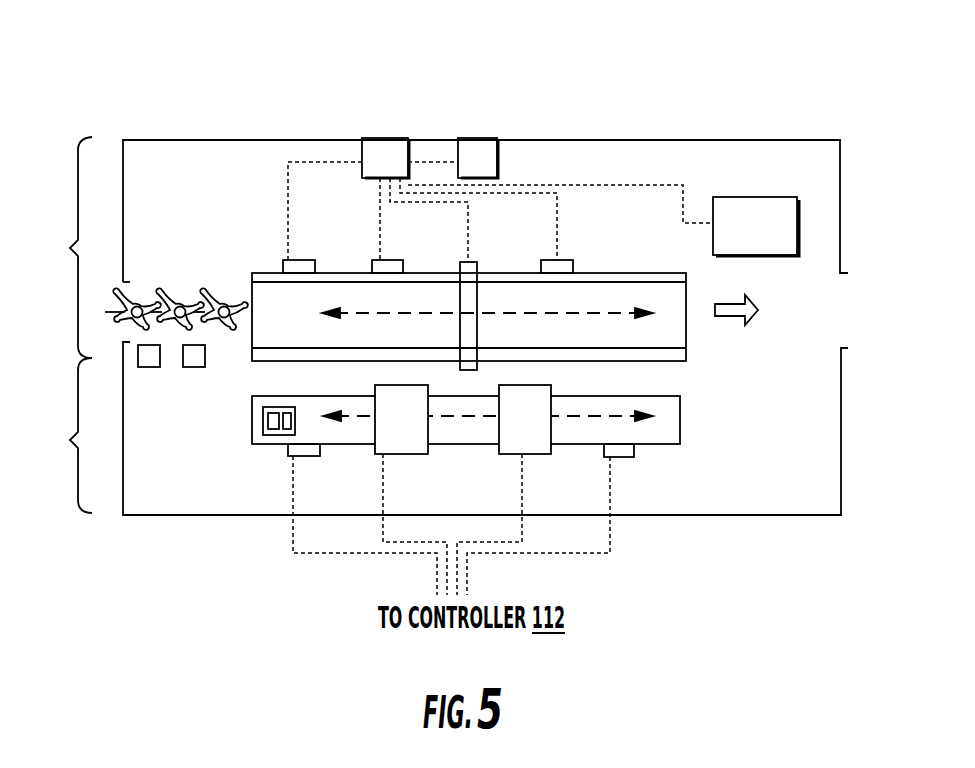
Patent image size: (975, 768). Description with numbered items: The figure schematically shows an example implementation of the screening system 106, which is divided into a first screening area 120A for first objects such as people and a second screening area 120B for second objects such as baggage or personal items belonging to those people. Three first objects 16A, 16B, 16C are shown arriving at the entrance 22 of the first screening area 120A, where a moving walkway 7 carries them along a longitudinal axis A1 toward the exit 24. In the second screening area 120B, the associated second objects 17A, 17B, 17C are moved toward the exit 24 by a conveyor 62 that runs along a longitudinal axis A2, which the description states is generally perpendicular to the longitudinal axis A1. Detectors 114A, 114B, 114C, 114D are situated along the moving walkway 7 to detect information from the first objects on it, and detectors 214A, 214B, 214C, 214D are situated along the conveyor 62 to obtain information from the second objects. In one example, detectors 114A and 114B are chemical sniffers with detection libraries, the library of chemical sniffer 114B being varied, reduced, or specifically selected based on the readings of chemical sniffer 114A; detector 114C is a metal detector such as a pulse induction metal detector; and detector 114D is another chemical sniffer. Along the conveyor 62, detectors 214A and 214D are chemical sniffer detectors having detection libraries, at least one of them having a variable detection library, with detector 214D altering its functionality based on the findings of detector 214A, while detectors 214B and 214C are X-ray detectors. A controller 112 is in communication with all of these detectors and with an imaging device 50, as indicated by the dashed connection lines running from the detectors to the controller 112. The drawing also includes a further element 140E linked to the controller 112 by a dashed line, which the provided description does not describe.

The screening system 106 is at (824, 100).
The first screening area 120A is at (57, 247).
The second screening area 120B is at (57, 435).
The entrance 22 is at (117, 300).
The exit 24 is at (840, 298).
The first object 16A is at (232, 292).
The first object 16B is at (190, 292).
The first object 16C is at (148, 292).
The second object 17A is at (263, 420).
The second object 17B is at (195, 369).
The second object 17C is at (150, 369).
The controller 112 is at (403, 171).
The imaging device 50 is at (490, 171).
The detector 114A is at (300, 258).
The detector 114B is at (392, 258).
The detector 114C is at (475, 260).
The detector 114D is at (566, 258).
The processing station 140E is at (742, 197).
The moving walkway 7 is at (673, 338).
The conveyor 62 is at (673, 435).
The detector 214A is at (300, 457).
The detector 214B is at (390, 455).
The detector 214C is at (528, 455).
The detector 214D is at (618, 458).
The longitudinal axis A1 is at (555, 313).
The longitudinal axis A2 is at (560, 416).